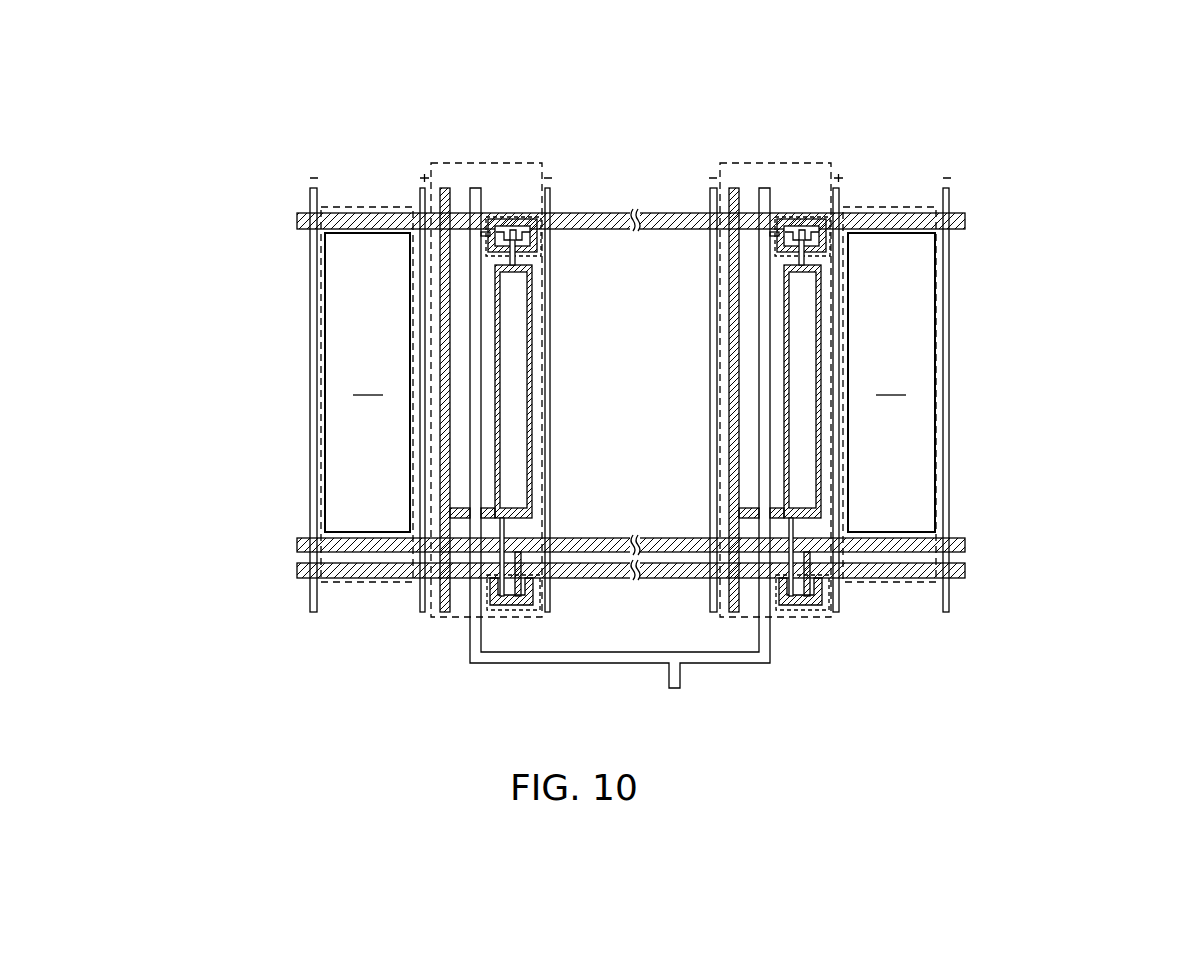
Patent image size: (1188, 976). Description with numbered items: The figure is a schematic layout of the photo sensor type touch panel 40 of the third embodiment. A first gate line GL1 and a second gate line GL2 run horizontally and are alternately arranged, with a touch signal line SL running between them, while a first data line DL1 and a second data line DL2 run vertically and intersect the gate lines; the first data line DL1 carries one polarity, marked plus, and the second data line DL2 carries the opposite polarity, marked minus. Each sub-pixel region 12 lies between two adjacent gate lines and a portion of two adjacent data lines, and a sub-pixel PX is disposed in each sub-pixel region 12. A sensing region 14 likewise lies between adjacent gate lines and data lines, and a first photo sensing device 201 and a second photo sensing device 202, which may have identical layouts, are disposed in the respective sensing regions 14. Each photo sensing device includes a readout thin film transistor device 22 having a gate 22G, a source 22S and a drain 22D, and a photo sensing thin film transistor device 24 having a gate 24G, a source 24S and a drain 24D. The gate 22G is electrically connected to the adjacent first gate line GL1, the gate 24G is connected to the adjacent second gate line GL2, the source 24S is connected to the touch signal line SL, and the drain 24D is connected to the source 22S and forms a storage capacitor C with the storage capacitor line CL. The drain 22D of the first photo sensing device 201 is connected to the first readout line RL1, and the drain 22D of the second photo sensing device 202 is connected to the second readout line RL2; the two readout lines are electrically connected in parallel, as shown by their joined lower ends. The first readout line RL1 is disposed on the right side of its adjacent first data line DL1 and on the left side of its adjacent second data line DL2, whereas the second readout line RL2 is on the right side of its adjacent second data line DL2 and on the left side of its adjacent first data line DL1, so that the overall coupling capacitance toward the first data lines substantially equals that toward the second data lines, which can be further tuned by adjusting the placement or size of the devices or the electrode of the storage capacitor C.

The photo sensor type touch panel 40 is at (1090, 86).
The sub-pixel region 12 is at (370, 207).
The sensing region 14 is at (437, 163).
The first photo sensing device 201 is at (500, 198).
The second photo sensing device 202 is at (812, 198).
The readout thin film transistor device 22 is at (536, 244).
The gate 22G is at (496, 236).
The drain 22D is at (508, 232).
The source 22S is at (516, 242).
The photo sensing thin film transistor device 24 is at (538, 600).
The gate 24G is at (522, 604).
The drain 24D is at (502, 606).
The source 24S is at (520, 600).
The storage capacitor C is at (541, 503).
The first gate line GL1 is at (297, 221).
The second gate line GL2 is at (297, 570).
The touch signal line SL is at (297, 545).
The storage capacitor line CL is at (500, 445).
The first data line DL1 is at (422, 188).
The second data line DL2 is at (314, 187).
The first readout line RL1 is at (470, 636).
The second readout line RL2 is at (759, 645).
The sub-pixel PX is at (630, 382).